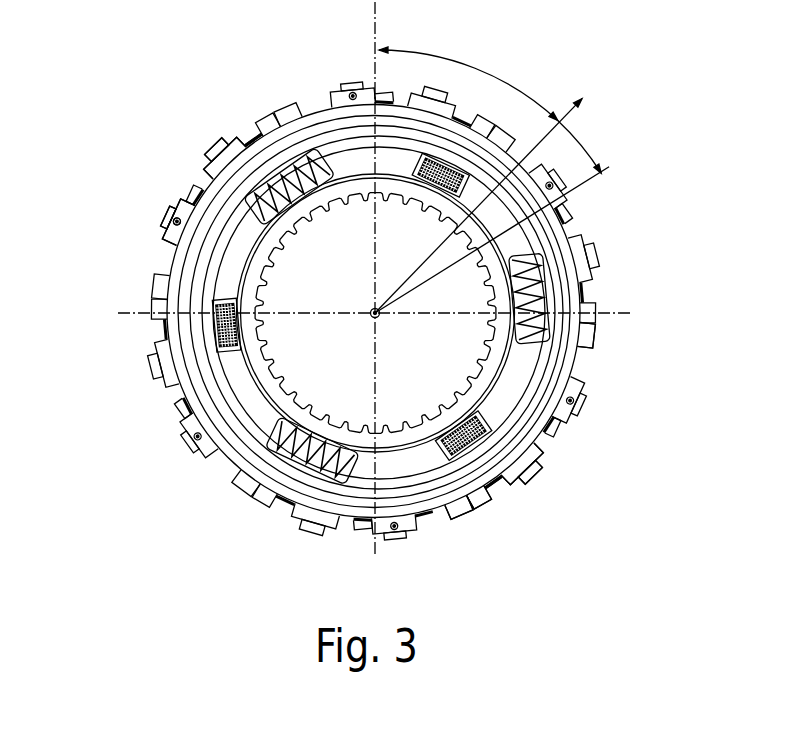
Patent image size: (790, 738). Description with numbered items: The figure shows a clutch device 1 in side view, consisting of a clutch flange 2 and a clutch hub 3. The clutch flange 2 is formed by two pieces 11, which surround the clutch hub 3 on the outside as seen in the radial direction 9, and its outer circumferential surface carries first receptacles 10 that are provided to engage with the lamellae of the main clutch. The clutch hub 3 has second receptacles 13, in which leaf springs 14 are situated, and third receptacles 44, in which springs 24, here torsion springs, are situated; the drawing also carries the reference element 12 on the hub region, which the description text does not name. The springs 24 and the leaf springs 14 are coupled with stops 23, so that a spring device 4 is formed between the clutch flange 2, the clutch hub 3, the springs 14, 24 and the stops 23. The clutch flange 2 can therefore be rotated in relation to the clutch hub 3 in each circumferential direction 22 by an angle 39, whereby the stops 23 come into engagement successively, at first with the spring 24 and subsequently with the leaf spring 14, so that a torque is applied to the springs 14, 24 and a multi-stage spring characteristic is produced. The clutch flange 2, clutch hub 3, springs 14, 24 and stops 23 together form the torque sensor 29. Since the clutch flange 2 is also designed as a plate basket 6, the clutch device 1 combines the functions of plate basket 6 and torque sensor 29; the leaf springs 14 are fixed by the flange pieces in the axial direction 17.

The clutch device 1 is at (192, 160).
The clutch flange 2 is at (165, 232).
The clutch hub 3 is at (470, 370).
The spring device 4 is at (438, 517).
The plate basket 6 is at (600, 345).
The radial direction 9 is at (486, 198).
The first receptacles 10 is at (497, 492).
The pieces 11 is at (452, 523).
The toothing 12 is at (268, 331).
The second receptacles 13 is at (214, 330).
The leaf springs 14 is at (493, 418).
The axial direction 17 is at (371, 310).
The circumferential direction 22 is at (468, 77).
The stops 23 is at (376, 362).
The springs 24 is at (275, 168).
The torque sensor 29 is at (238, 125).
The angle 39 is at (496, 216).
The third receptacles 44 is at (250, 140).